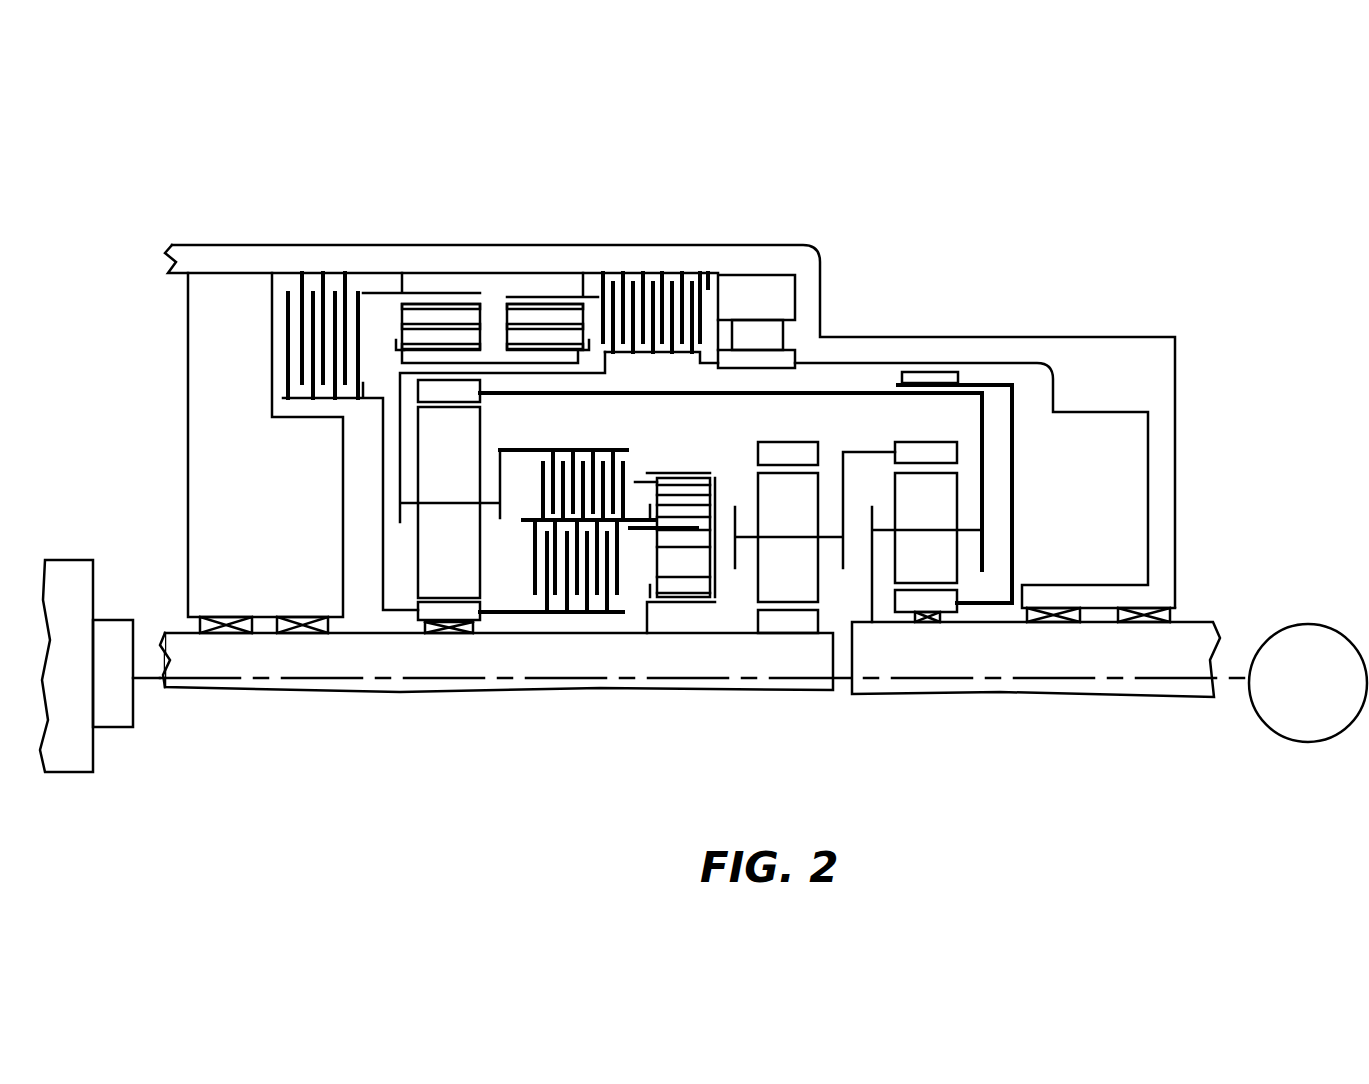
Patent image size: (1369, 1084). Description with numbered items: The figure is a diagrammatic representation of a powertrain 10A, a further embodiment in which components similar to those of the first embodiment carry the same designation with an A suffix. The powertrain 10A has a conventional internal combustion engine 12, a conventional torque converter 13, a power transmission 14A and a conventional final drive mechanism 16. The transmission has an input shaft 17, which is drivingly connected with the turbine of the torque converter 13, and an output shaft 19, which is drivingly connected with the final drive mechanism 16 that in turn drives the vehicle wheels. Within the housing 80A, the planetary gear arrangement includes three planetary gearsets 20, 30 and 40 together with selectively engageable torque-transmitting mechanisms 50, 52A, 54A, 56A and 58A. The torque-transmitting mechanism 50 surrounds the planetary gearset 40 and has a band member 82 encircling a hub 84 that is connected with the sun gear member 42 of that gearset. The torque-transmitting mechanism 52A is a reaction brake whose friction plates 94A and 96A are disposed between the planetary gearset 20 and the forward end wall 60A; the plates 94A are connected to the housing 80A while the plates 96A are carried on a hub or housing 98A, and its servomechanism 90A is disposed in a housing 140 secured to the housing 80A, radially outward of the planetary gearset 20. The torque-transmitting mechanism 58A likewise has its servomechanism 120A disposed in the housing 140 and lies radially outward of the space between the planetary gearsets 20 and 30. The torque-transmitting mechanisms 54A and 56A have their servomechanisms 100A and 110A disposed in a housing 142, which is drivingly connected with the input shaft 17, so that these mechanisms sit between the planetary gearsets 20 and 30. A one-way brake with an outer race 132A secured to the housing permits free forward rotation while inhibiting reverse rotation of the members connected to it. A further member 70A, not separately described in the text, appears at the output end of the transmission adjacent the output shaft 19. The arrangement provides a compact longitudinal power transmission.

The powertrain 10A is at (226, 162).
The internal combustion engine 12 is at (80, 556).
The torque converter 13 is at (137, 617).
The power transmission 14A is at (601, 241).
The final drive mechanism 16 is at (1351, 622).
The input shaft 17 is at (198, 686).
The output shaft 19 is at (1132, 690).
The planetary gearset 20 is at (450, 648).
The planetary gearset 30 is at (782, 652).
The planetary gearset 40 is at (928, 642).
The sun gear member 42 is at (947, 602).
The torque-transmitting mechanism 50 is at (930, 369).
The torque-transmitting mechanism 52A is at (320, 258).
The torque-transmitting mechanism 54A is at (568, 632).
The torque-transmitting mechanism 56A is at (591, 442).
The torque-transmitting mechanism 58A is at (656, 266).
The forward end wall 60A is at (182, 395).
The output hub 70A is at (1183, 421).
The housing 80A is at (778, 243).
The band member 82 is at (915, 375).
The hub 84 is at (998, 385).
The servomechanism 90A is at (448, 280).
The friction plates 94A is at (287, 317).
The friction plates 96A is at (350, 287).
The hub or housing 98A is at (383, 568).
The servomechanism 100A is at (680, 648).
The servomechanism 110A is at (684, 462).
The servomechanism 120A is at (564, 280).
The outer race 132A is at (799, 303).
The housing 140 is at (493, 312).
The housing 142 is at (717, 495).